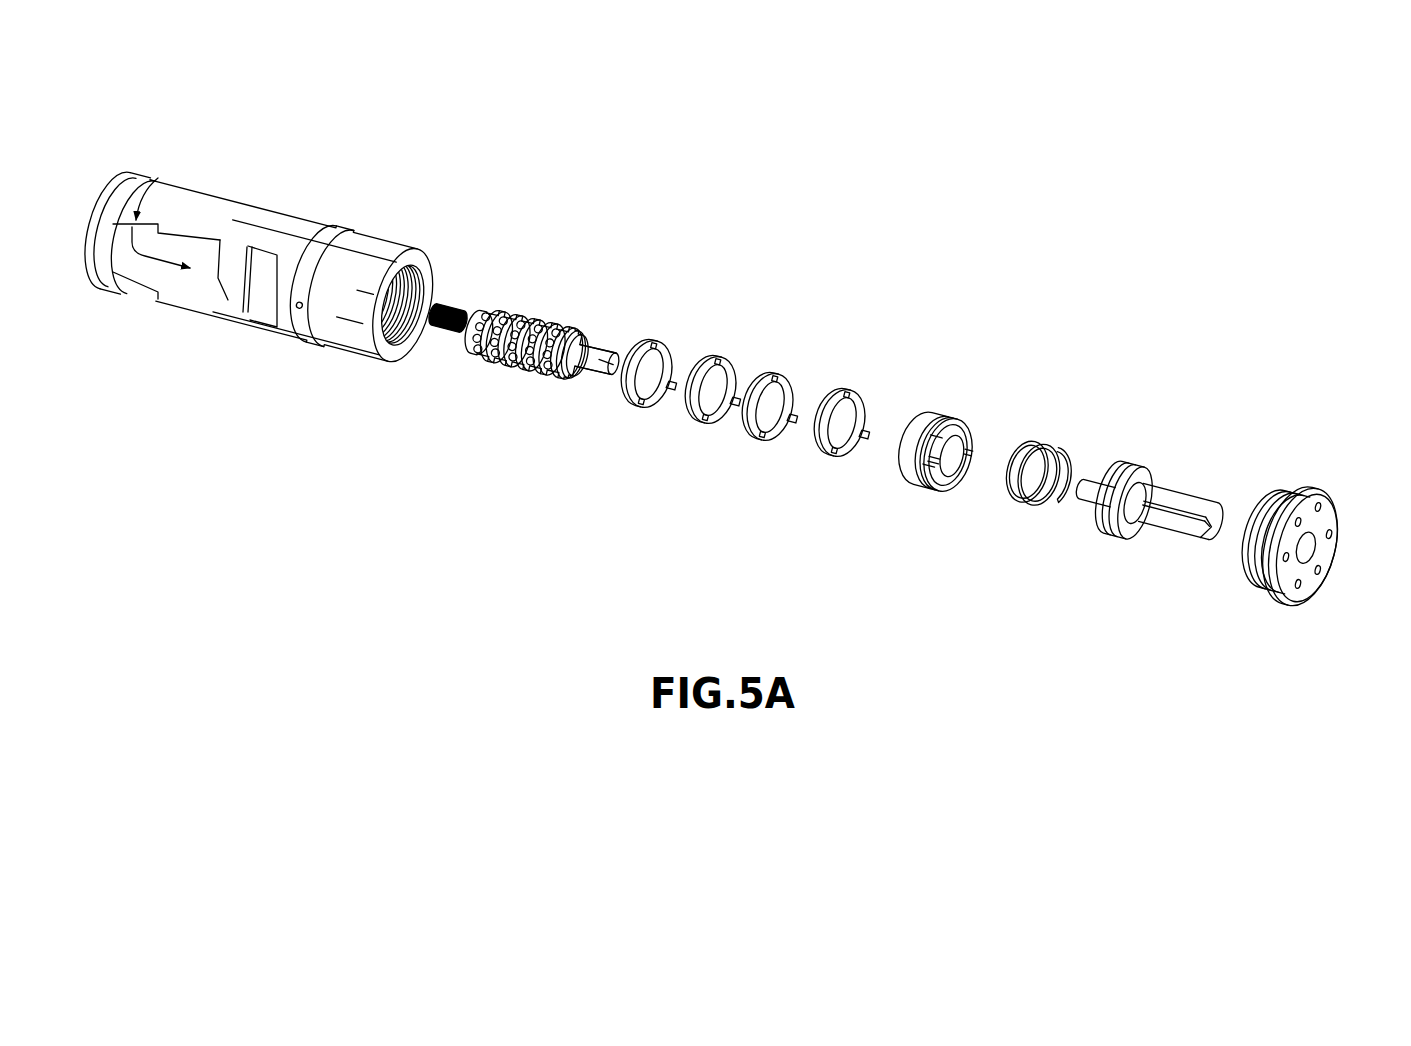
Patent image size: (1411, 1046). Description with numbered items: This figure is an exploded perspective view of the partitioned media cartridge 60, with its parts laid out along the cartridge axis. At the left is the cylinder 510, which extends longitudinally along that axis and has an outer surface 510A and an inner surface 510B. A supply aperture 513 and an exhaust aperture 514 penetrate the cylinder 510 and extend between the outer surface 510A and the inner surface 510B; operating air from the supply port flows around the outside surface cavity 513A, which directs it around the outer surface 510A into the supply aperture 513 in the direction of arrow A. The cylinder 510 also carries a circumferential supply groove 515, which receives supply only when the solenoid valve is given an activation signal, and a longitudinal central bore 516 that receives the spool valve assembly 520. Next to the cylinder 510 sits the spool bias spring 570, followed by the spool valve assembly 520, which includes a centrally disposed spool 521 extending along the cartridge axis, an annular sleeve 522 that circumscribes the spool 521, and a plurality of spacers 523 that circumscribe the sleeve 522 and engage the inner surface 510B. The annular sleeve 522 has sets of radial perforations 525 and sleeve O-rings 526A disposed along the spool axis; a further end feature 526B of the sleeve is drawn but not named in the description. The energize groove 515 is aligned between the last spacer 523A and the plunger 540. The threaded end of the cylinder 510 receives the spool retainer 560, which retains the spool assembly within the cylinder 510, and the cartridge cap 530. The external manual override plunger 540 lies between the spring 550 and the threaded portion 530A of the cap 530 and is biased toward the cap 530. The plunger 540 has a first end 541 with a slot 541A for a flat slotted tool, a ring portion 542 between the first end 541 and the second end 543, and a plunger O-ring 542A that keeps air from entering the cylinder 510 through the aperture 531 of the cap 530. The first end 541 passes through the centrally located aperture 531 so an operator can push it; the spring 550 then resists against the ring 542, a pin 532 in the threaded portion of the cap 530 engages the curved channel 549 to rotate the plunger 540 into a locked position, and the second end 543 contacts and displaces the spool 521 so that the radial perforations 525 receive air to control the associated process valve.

The media cartridge 60 is at (682, 212).
The cylinder 510 is at (275, 205).
The outer surface 510A is at (208, 218).
The inner surface 510B is at (380, 368).
The supply aperture 513 is at (220, 297).
The outside surface cavity 513A is at (138, 188).
The exhaust aperture 514 is at (247, 293).
The circumferential supply groove 515 is at (332, 232).
The longitudinal central bore 516 is at (405, 292).
The spool valve assembly 520 is at (532, 300).
The spool 521 is at (593, 370).
The annular sleeve 522 is at (515, 363).
The spacers 523 is at (838, 393).
The last spacer 523A is at (833, 463).
The radial perforations 525 is at (543, 410).
The sleeve O-rings 526A is at (478, 350).
The second end of insert 526B is at (583, 338).
The cartridge cap 530 is at (1273, 605).
The threaded portion 530A is at (1272, 498).
The aperture 531 is at (1307, 550).
The pin 532 is at (1247, 577).
The external manual override plunger 540 is at (1137, 470).
The first end 541 is at (1185, 498).
The slot 541A is at (1205, 540).
The ring portion 542 is at (1118, 460).
The plunger O-ring 542A is at (1095, 530).
The second end 543 is at (1077, 492).
The channel 549 is at (1122, 538).
The spring 550 is at (1032, 443).
The spool retainer 560 is at (940, 413).
The spool bias spring 570 is at (452, 310).